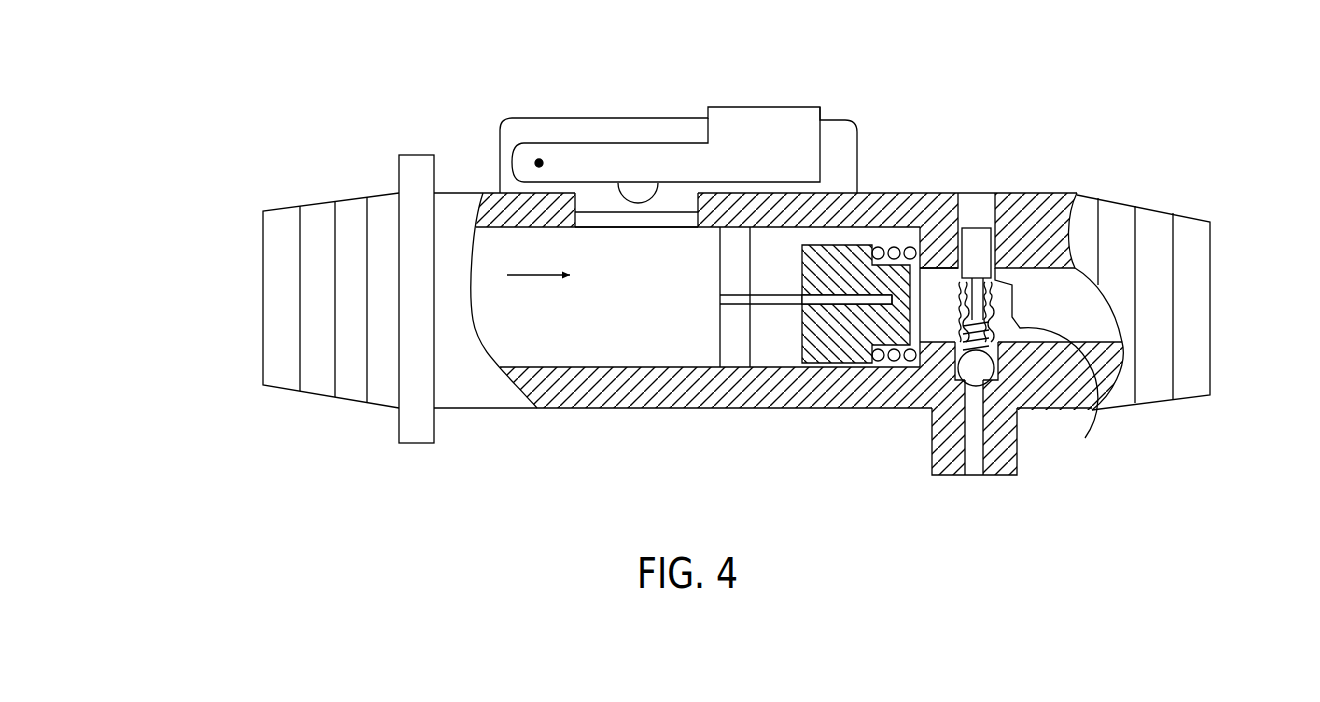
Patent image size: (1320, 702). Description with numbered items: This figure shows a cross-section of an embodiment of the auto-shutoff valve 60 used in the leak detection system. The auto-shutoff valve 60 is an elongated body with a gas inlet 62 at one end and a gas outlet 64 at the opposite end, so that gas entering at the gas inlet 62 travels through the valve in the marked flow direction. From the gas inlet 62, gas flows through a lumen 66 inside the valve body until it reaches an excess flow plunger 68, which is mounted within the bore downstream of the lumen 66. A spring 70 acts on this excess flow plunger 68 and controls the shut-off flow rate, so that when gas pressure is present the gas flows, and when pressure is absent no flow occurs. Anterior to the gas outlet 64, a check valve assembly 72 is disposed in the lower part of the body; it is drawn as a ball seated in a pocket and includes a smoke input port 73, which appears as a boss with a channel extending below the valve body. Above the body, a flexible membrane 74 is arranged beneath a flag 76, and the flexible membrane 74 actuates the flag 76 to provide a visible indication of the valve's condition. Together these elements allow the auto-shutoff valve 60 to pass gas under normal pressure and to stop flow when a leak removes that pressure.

The auto-shutoff valve 60 is at (230, 98).
The gas inlet 62 is at (220, 295).
The gas outlet 64 is at (1217, 290).
The lumen 66 is at (670, 313).
The excess flow plunger 68 is at (790, 345).
The spring 70 is at (895, 373).
The check valve assembly 72 is at (988, 388).
The smoke input port 73 is at (967, 492).
The flexible membrane 74 is at (588, 195).
The flag 76 is at (735, 133).